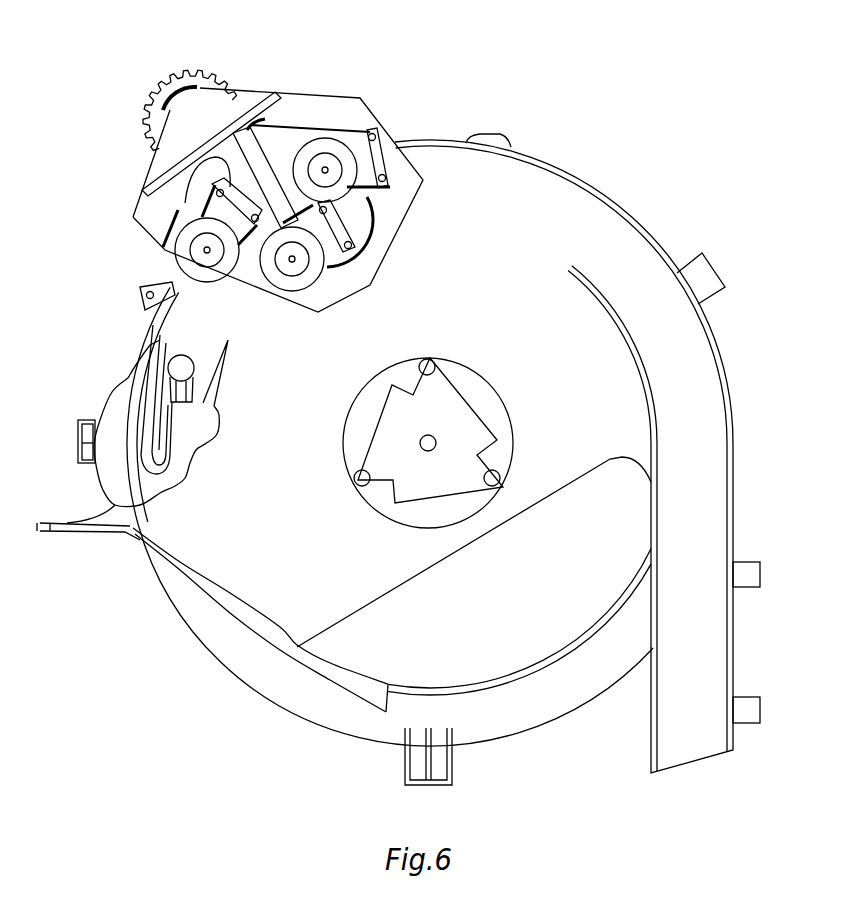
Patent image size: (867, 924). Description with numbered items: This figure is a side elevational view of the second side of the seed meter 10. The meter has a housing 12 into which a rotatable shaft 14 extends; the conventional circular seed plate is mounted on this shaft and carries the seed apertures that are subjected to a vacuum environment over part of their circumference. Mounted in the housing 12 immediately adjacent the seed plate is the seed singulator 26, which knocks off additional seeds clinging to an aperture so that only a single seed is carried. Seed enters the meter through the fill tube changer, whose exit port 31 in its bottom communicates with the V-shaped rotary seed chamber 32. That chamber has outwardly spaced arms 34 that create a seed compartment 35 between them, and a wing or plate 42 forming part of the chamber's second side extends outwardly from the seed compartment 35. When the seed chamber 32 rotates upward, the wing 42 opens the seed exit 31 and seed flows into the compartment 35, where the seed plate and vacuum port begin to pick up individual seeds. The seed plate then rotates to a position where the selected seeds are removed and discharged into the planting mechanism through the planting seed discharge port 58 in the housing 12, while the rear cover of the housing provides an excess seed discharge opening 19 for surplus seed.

The seed meter 10 is at (530, 97).
The housing 12 is at (568, 170).
The rotatable shaft 14 is at (430, 452).
The excess seed discharge opening 19 is at (388, 665).
The seed singulator 26 is at (298, 93).
The exit port 31 is at (172, 325).
The rotary seed chamber 32 is at (143, 476).
The arms 34 is at (168, 352).
The seed compartment 35 is at (165, 402).
The wing 42 is at (111, 408).
The planting seed discharge port 58 is at (692, 765).